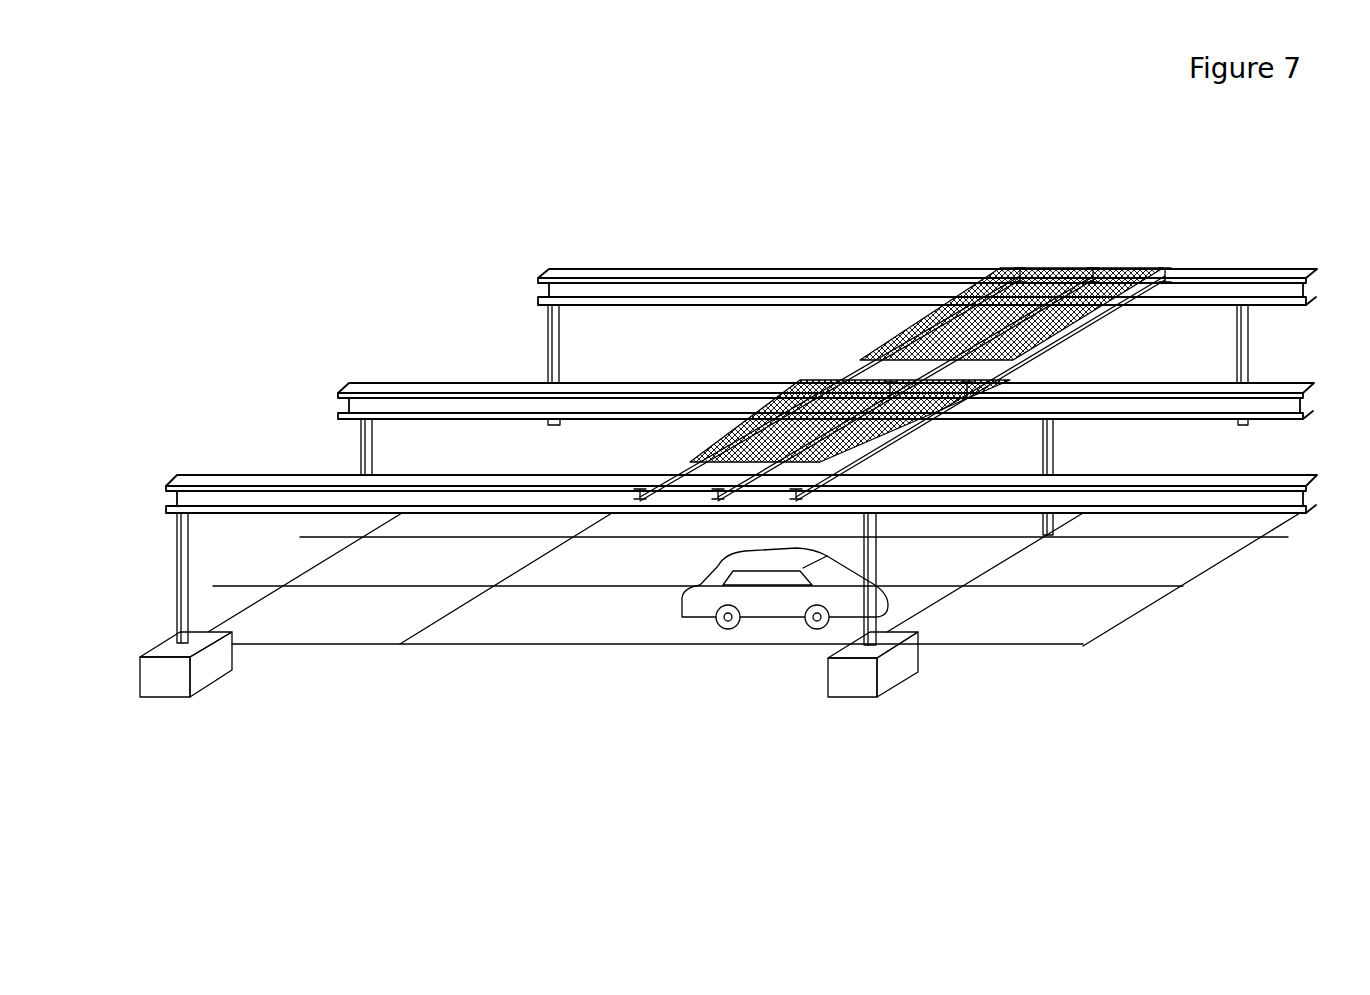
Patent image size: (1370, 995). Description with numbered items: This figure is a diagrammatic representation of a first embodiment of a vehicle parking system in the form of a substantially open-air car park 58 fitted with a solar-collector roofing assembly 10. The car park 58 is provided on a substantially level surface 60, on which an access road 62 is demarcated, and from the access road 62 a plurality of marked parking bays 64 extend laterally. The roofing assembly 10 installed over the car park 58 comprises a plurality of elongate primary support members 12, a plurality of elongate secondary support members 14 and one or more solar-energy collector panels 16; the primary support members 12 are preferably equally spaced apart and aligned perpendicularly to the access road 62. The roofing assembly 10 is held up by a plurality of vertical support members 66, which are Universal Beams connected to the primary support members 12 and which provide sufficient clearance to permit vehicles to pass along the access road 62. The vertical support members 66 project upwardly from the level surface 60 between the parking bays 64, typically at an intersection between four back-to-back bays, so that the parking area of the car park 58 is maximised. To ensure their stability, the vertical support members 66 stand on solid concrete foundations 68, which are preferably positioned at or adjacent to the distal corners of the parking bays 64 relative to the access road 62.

The solar-collector roofing assembly 10 is at (902, 333).
The primary support member 12 is at (1235, 261).
The secondary support member 14 is at (1017, 380).
The solar-energy collector panel 16 is at (1040, 262).
The car park 58 is at (276, 338).
The level surface 60 is at (665, 652).
The access road 62 is at (547, 628).
The parking bay 64 is at (529, 533).
The vertical support member 66 is at (178, 570).
The concrete foundation 68 is at (206, 667).